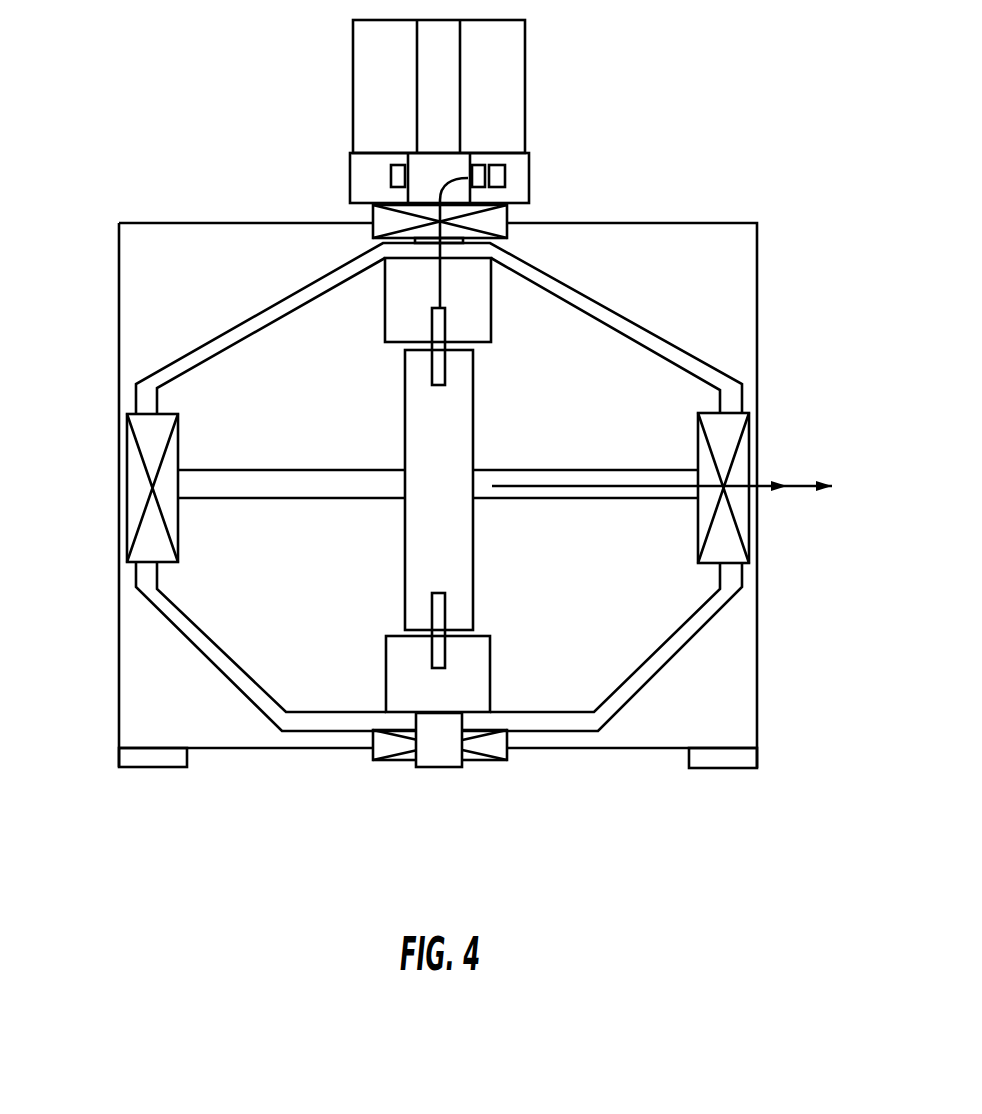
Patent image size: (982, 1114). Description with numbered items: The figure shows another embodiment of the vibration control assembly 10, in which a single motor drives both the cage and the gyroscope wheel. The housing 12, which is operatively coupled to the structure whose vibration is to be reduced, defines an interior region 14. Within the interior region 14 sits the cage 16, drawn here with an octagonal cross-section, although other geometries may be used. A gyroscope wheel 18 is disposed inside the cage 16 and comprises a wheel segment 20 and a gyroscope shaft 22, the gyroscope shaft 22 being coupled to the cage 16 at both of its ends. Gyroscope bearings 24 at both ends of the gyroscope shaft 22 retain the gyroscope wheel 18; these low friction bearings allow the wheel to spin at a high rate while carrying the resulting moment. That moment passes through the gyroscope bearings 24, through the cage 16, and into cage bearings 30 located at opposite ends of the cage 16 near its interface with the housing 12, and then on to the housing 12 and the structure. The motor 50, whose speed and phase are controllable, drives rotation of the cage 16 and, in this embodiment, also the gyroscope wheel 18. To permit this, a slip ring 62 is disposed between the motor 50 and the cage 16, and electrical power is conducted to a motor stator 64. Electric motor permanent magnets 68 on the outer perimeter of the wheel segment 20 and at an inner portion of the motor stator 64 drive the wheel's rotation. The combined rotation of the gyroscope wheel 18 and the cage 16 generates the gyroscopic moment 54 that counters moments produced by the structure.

The vibration control assembly 10 is at (143, 178).
The housing 12 is at (119, 338).
The interior region 14 is at (150, 274).
The cage 16 is at (636, 327).
The gyroscope wheel 18 is at (385, 518).
The wheel segment 20 is at (462, 567).
The gyroscope shaft 22 is at (339, 476).
The gyroscope bearings 24 is at (138, 518).
The cage bearings 30 is at (500, 215).
The motor 50 is at (507, 88).
The gyroscopic moment 54 is at (795, 489).
The slip ring 62 is at (367, 163).
The motor stator 64 is at (395, 306).
The electric motor permanent magnets 68 is at (442, 375).